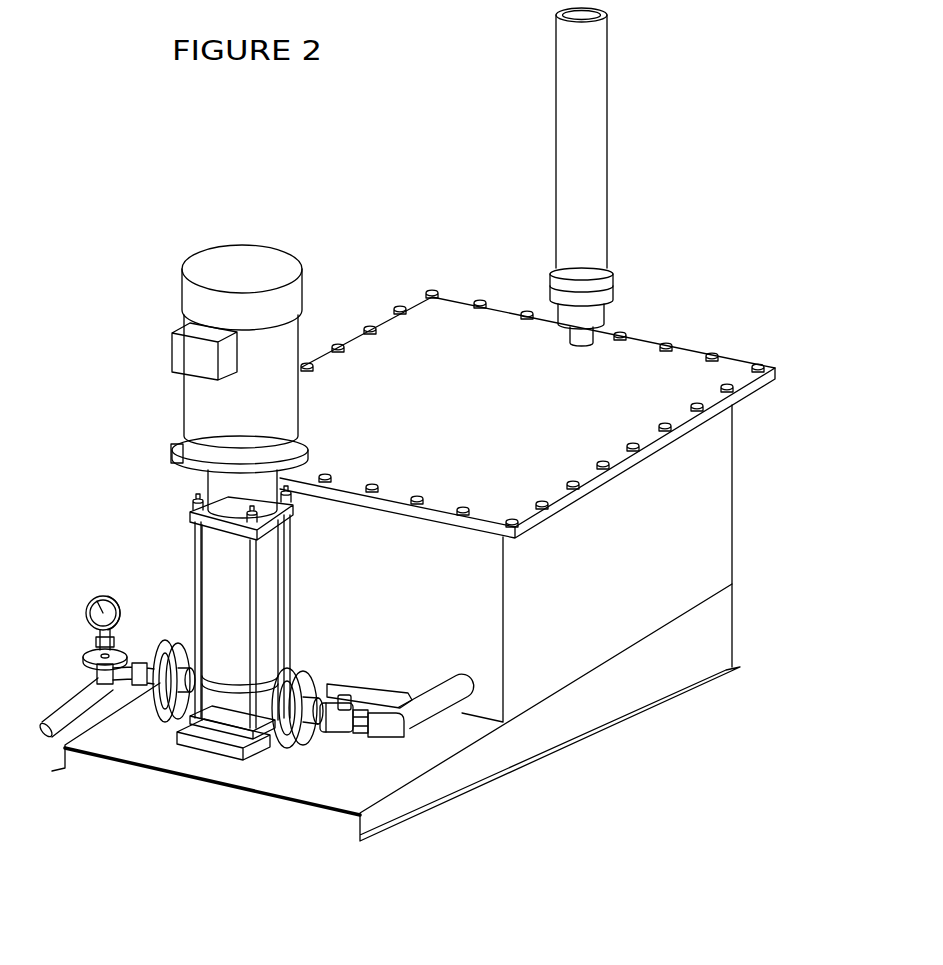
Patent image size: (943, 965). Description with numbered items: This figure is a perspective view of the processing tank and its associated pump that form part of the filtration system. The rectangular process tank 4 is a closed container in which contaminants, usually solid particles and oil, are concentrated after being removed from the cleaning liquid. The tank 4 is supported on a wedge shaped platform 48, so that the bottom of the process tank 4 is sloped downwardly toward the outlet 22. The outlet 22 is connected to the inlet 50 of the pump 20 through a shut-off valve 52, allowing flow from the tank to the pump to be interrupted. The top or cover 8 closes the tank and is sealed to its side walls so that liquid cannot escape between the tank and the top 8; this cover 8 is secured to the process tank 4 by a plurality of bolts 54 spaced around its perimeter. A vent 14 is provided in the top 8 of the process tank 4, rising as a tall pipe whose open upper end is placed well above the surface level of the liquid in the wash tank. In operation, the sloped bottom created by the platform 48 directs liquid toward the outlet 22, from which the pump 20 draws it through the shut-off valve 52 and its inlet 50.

The process tank 4 is at (742, 522).
The top 8 is at (628, 365).
The vent 14 is at (609, 77).
The pump 20 is at (272, 568).
The outlet 22 is at (458, 706).
The wedge shaped platform 48 is at (584, 718).
The inlet 50 is at (336, 688).
The shut-off valve 52 is at (338, 730).
The bolts 54 is at (398, 303).